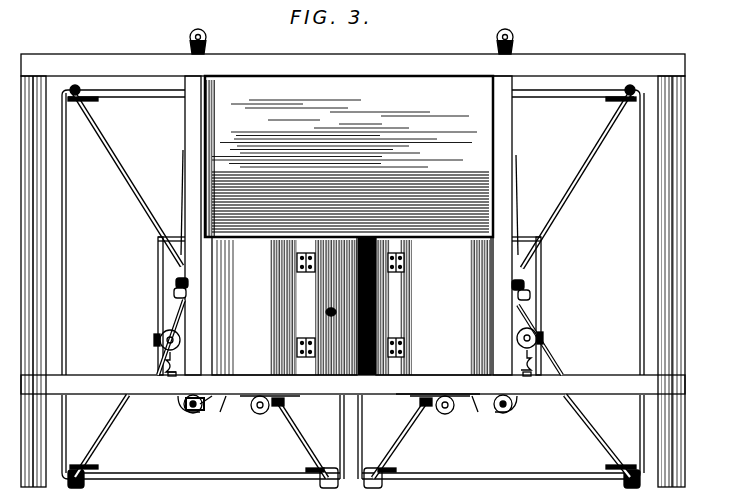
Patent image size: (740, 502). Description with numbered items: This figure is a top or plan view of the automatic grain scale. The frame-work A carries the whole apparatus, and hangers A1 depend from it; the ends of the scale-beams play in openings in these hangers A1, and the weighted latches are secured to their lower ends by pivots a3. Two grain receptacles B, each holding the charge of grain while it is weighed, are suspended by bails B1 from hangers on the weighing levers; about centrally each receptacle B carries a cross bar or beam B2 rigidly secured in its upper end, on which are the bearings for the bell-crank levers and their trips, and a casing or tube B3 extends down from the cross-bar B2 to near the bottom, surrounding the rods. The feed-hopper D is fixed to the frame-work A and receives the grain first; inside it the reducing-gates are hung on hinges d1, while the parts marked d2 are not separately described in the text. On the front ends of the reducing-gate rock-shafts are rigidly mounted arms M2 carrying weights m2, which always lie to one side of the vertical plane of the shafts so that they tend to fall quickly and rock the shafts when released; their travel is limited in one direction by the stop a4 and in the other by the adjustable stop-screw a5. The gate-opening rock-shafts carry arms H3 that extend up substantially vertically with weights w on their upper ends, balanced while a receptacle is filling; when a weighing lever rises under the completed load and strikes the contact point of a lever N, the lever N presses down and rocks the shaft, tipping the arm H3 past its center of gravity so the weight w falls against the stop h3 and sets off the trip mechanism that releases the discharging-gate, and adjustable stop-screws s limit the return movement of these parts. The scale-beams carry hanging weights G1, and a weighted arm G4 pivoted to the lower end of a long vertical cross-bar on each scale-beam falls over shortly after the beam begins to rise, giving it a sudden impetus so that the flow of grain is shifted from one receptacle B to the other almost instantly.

The frame-work A is at (386, 67).
The hanger A1 is at (498, 414).
The receptacle B is at (64, 213).
The bail B1 is at (125, 163).
The cross bar B2 is at (298, 447).
The casing or tube B3 is at (160, 304).
The lever N is at (182, 209).
The feed-hopper D is at (349, 225).
The hinge d1 is at (310, 337).
The hinge d2 is at (405, 268).
The stop h3 is at (175, 289).
The arm H3 is at (160, 343).
The weight w is at (180, 333).
The adjustable stop-screw s is at (183, 374).
The pivot a3 is at (462, 394).
The stop a4 is at (276, 404).
The adjustable stop-screw a5 is at (194, 414).
The hanging weight G1 is at (180, 413).
The weighted arm G4 is at (208, 30).
The weight m2 is at (252, 408).
The arm M2 is at (258, 416).